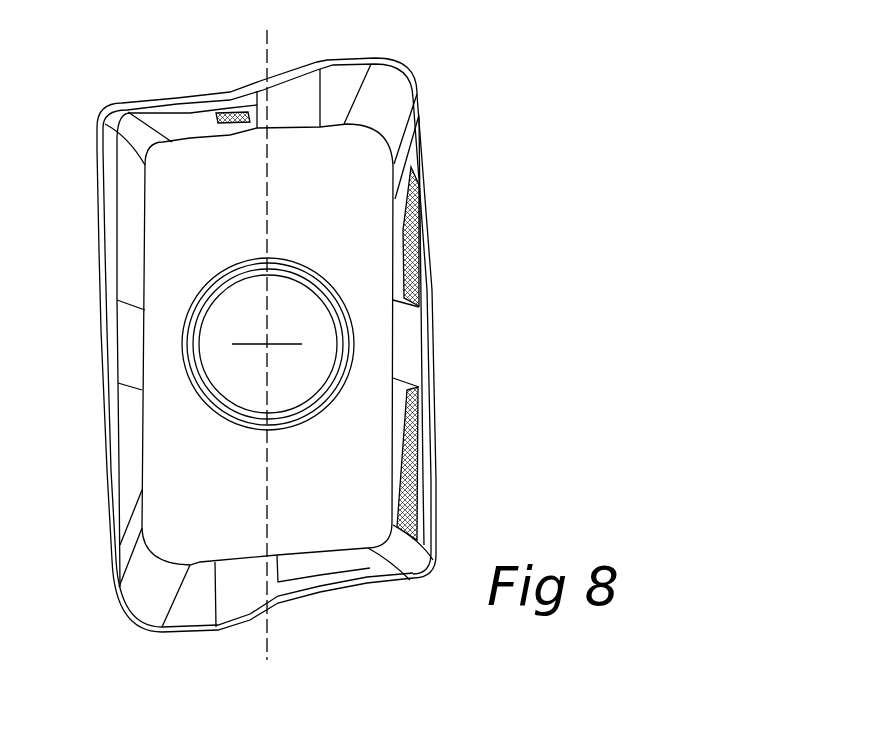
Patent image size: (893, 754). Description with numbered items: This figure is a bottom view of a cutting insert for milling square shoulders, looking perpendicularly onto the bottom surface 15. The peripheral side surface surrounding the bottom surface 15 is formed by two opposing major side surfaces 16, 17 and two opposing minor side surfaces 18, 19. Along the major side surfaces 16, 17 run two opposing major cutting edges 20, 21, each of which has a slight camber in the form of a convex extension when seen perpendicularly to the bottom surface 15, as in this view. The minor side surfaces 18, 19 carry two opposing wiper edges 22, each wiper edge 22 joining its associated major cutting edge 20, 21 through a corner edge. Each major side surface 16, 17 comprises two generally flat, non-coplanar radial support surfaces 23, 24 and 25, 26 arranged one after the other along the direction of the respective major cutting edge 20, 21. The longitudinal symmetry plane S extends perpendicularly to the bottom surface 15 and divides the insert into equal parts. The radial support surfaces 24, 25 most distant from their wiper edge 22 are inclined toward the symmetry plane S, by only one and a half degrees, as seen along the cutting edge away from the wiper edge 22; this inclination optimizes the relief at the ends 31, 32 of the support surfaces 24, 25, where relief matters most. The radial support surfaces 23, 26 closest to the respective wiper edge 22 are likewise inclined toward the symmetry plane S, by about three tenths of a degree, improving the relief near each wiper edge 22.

The bottom surface 15 is at (360, 522).
The major side surface 16 is at (435, 338).
The major side surface 17 is at (102, 335).
The minor side surface 18 is at (320, 593).
The minor side surface 19 is at (288, 66).
The major cutting edge 20 is at (430, 260).
The major cutting edge 21 is at (98, 280).
The wiper edge 22 is at (342, 57).
The radial support surface 23 is at (398, 233).
The radial support surface 24 is at (398, 402).
The radial support surface 25 is at (130, 233).
The radial support surface 26 is at (130, 443).
The end of support surface 31 is at (395, 523).
The end of support surface 32 is at (143, 173).
The longitudinal symmetry plane S is at (267, 220).